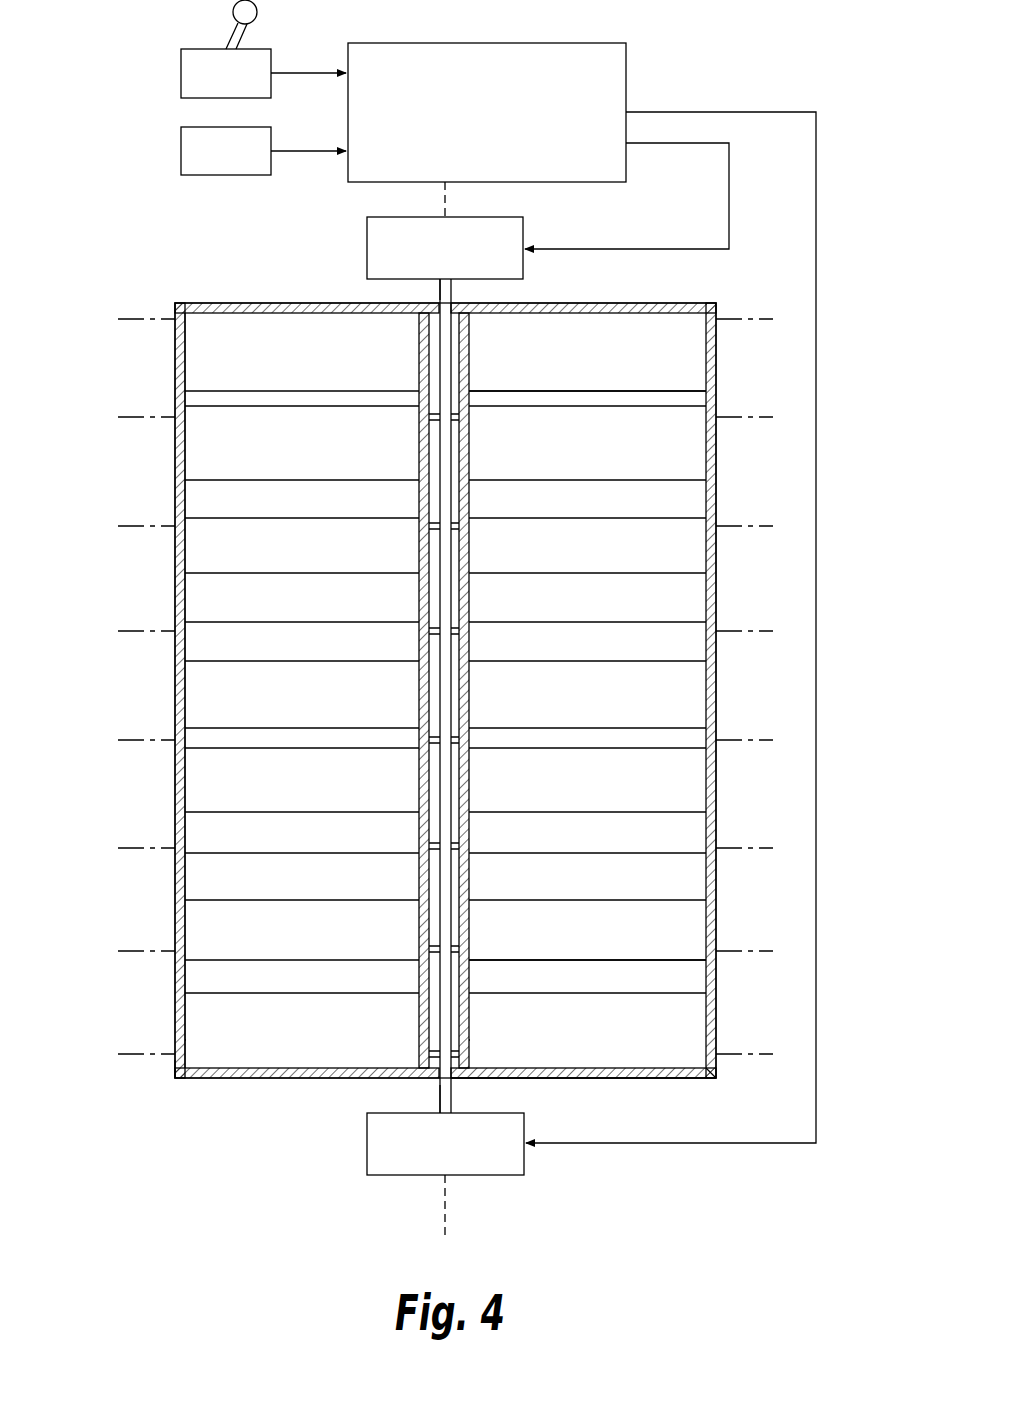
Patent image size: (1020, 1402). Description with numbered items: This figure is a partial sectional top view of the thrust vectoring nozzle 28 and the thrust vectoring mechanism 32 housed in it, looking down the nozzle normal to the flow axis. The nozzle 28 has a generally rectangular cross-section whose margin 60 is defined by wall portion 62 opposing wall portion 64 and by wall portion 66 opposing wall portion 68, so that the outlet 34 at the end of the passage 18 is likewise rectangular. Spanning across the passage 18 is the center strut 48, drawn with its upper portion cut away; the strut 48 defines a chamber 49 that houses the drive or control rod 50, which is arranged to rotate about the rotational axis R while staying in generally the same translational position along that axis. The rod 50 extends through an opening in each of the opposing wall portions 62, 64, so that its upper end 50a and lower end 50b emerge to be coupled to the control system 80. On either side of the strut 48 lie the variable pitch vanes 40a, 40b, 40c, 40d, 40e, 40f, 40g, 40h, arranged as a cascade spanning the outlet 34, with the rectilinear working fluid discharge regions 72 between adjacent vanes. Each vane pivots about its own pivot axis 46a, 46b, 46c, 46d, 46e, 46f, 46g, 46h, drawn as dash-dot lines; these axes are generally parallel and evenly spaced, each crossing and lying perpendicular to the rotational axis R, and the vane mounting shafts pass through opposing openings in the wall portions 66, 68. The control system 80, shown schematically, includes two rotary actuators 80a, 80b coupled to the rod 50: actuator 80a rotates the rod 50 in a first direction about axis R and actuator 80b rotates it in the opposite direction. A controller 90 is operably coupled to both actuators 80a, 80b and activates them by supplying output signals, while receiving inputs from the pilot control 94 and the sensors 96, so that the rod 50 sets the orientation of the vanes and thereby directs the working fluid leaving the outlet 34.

The passage 18 is at (706, 1030).
The thrust vectoring nozzle 28 is at (180, 1082).
The thrust vectoring mechanism 32 is at (590, 1082).
The outlet 34 is at (187, 370).
The variable pitch vane 40a is at (285, 1040).
The variable pitch vane 40b is at (285, 945).
The variable pitch vane 40c is at (285, 845).
The variable pitch vane 40d is at (225, 737).
The variable pitch vane 40e is at (285, 654).
The variable pitch vane 40f is at (287, 560).
The variable pitch vane 40g is at (285, 455).
The variable pitch vane 40h is at (285, 369).
The pivot axis 46a is at (133, 1054).
The pivot axis 46b is at (133, 951).
The pivot axis 46c is at (133, 848).
The pivot axis 46d is at (133, 740).
The pivot axis 46e is at (133, 631).
The pivot axis 46f is at (133, 526).
The pivot axis 46g is at (133, 417).
The pivot axis 46h is at (133, 319).
The center strut 48 is at (421, 345).
The chamber 49 is at (462, 345).
The control rod 50 is at (455, 1094).
The control rod end 50a is at (440, 285).
The control rod end 50b is at (440, 1102).
The margin 60 is at (633, 1068).
The wall portion 62 is at (658, 313).
The wall portion 64 is at (232, 1072).
The wall portion 66 is at (706, 362).
The wall portion 68 is at (185, 1030).
The working fluid discharge region 72 is at (698, 391).
The control system 80 is at (728, 94).
The rotary actuator 80a is at (508, 217).
The rotary actuator 80b is at (367, 1162).
The controller 90 is at (476, 163).
The pilot control 94 is at (215, 91).
The sensors 96 is at (248, 177).
The rotational axis R is at (447, 1205).